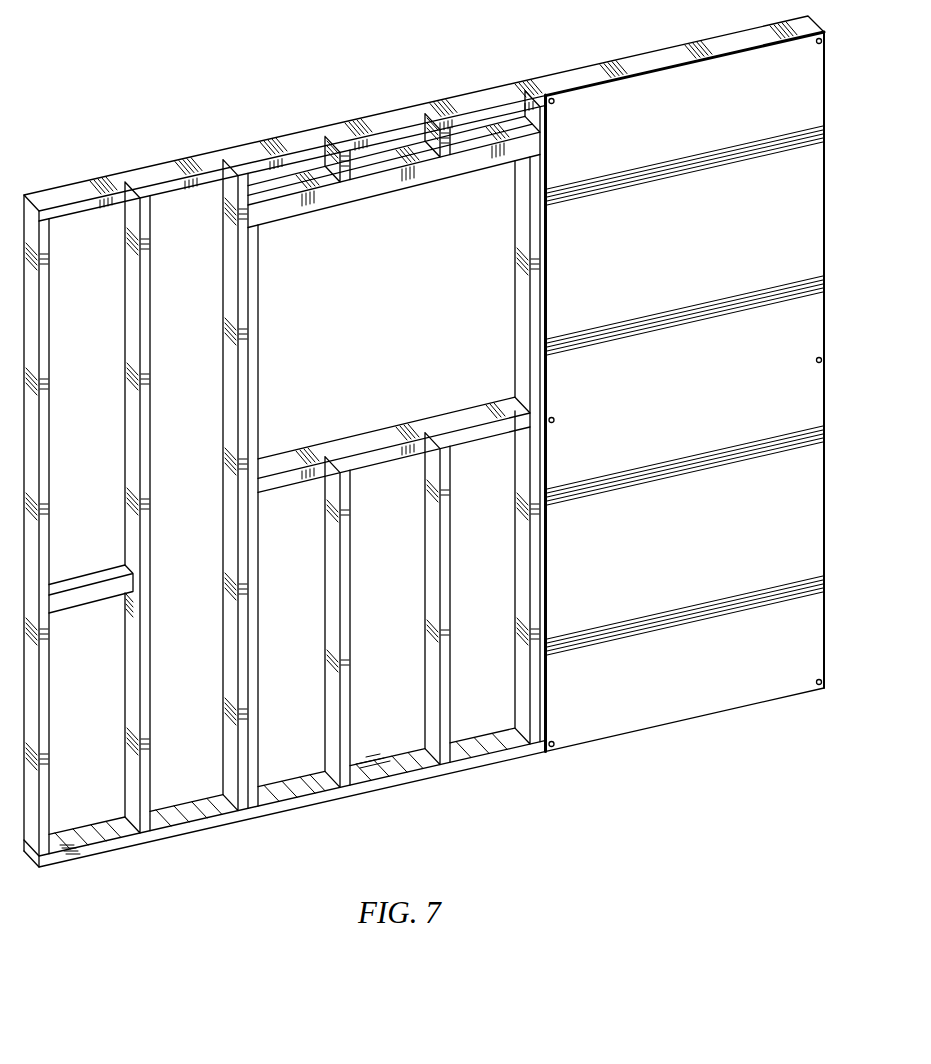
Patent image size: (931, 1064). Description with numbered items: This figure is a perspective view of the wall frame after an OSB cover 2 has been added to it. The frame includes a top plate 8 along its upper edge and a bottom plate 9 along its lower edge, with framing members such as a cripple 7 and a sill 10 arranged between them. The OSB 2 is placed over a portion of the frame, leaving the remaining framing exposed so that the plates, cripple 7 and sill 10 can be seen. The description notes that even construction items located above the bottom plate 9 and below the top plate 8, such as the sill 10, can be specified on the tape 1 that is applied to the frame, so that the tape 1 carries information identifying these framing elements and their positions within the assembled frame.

The tape 1 is at (373, 763).
The OSB 2 is at (698, 690).
The cripple 7 is at (452, 152).
The top plate 8 is at (553, 83).
The bottom plate 9 is at (250, 815).
The sill 10 is at (270, 466).